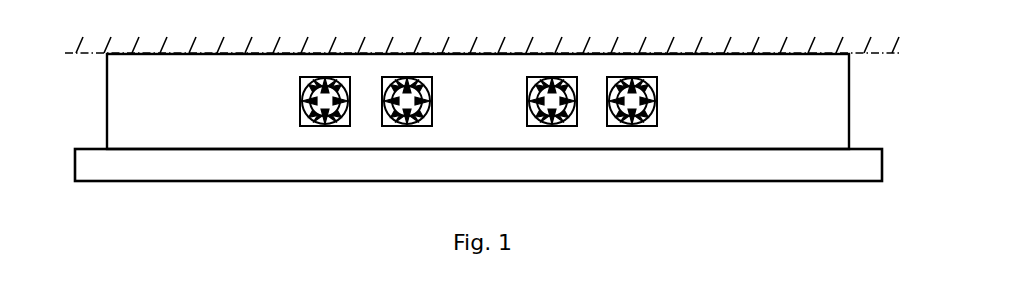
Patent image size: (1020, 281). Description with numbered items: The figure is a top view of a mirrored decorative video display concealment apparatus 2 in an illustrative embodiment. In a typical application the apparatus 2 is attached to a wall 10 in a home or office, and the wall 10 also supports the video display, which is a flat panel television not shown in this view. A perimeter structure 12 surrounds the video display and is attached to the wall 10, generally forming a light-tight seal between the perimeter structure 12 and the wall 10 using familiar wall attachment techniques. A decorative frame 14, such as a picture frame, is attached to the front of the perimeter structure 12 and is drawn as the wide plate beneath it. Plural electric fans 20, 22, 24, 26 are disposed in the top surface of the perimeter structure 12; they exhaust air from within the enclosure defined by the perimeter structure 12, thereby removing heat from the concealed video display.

The mirrored decorative video display concealment apparatus 2 is at (218, 234).
The wall 10 is at (873, 58).
The perimeter structure 12 is at (107, 67).
The decorative frame 14 is at (85, 181).
The electric fan 20 is at (300, 95).
The electric fan 22 is at (432, 94).
The electric fan 24 is at (527, 100).
The electric fan 26 is at (657, 104).